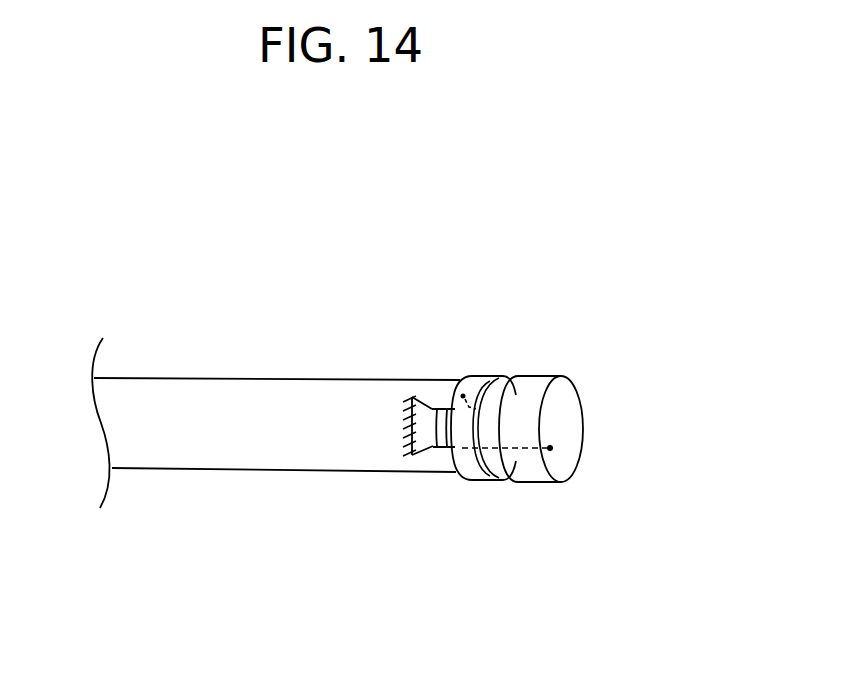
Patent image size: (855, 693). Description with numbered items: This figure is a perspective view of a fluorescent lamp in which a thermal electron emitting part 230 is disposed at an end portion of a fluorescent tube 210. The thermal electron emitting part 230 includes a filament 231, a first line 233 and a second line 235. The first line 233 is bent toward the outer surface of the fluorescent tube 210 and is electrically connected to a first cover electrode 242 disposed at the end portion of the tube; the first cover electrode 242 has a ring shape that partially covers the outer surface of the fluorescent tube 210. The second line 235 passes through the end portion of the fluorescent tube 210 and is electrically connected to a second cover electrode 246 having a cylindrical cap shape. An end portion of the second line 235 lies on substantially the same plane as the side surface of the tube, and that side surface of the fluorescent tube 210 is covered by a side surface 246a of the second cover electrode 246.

The fluorescent tube 210 is at (227, 380).
The thermal electron emitting part 230 is at (442, 506).
The filament 231 is at (410, 447).
The first line 233 is at (437, 447).
The second line 235 is at (447, 447).
The first cover electrode 242 is at (468, 383).
The second cover electrode 246 is at (533, 385).
The side surface 246a is at (572, 440).